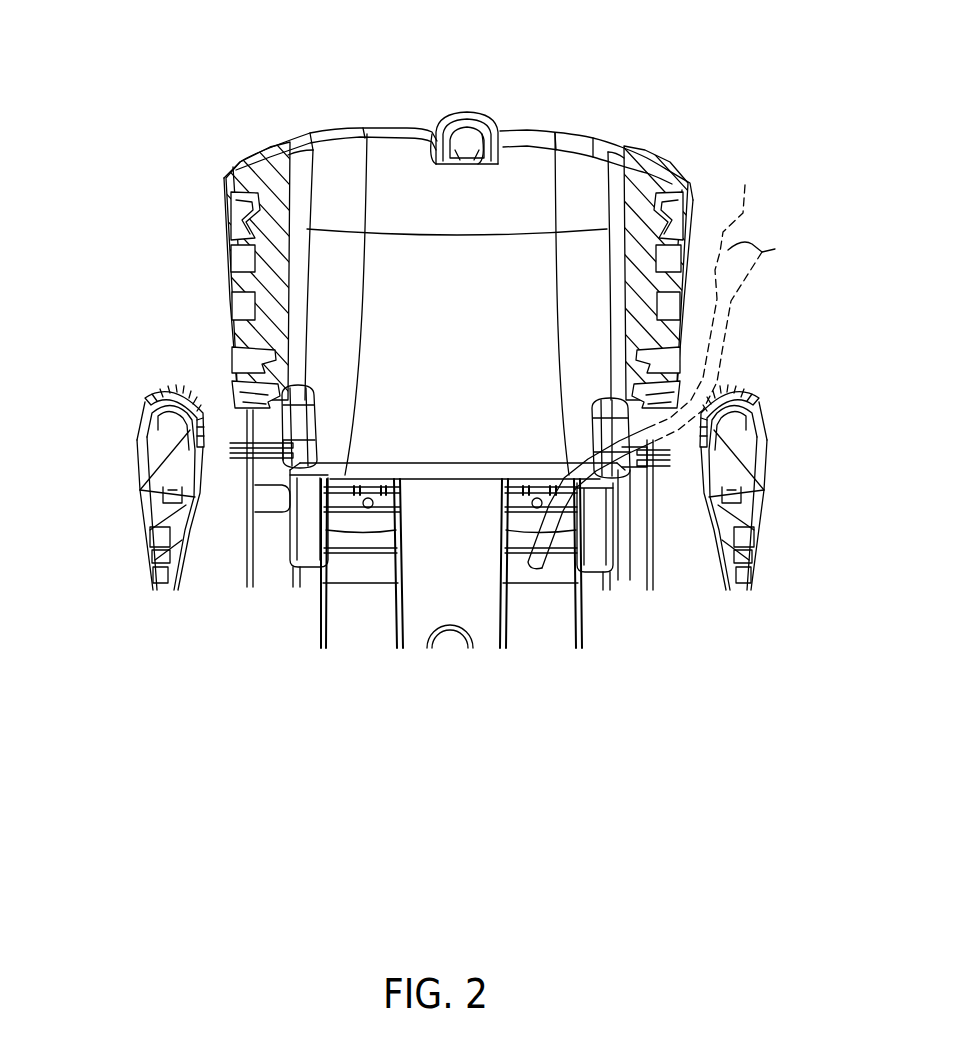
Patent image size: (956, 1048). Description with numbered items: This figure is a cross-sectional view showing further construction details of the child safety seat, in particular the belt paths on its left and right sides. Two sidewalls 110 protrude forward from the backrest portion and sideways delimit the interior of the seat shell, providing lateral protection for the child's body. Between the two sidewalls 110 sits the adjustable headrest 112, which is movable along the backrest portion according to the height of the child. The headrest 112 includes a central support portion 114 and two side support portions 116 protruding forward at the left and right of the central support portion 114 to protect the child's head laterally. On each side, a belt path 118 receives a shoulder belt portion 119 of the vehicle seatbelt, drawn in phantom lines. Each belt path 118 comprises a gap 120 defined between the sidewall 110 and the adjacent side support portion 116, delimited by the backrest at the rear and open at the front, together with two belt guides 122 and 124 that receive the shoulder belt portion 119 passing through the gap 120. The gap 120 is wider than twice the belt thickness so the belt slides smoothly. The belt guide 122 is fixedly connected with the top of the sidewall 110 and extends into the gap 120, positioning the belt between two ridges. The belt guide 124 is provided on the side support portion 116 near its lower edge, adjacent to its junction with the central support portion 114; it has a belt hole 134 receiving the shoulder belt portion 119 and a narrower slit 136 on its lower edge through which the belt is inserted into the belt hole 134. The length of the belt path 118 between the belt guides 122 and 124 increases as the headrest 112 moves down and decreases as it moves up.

The sidewall 110 is at (243, 447).
The headrest 112 is at (594, 134).
The central support portion 114 is at (400, 166).
The side support portion 116 is at (264, 170).
The belt path 118 is at (207, 355).
The shoulder belt portion 119 is at (651, 361).
The gap 120 is at (203, 455).
The belt guide 122 is at (192, 373).
The belt guide 124 is at (238, 450).
The belt hole 134 is at (344, 482).
The slit 136 is at (234, 458).